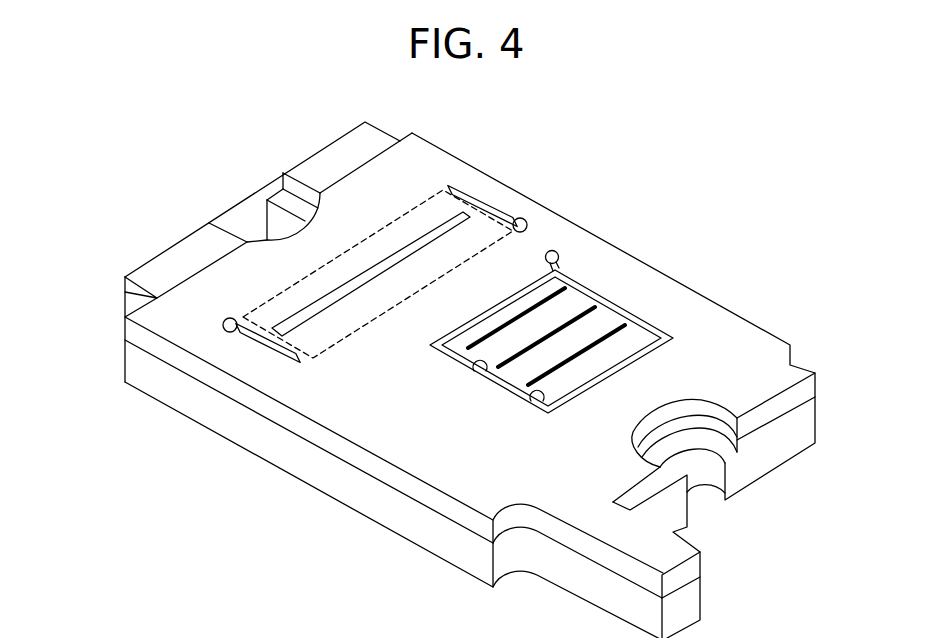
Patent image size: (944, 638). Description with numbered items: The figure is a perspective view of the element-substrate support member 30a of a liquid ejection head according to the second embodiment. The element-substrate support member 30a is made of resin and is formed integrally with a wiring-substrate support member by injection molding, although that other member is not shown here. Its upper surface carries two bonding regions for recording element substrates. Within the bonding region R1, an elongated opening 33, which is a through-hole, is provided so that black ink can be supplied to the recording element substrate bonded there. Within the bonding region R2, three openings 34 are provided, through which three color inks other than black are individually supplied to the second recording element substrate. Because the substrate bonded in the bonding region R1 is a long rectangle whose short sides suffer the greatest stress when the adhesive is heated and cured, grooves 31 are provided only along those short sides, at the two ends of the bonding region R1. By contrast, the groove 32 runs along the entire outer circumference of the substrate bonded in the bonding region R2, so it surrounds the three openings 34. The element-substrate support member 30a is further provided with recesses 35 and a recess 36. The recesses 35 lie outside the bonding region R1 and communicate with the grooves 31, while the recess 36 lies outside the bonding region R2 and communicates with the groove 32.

The element-substrate support member 30a is at (143, 233).
The grooves 31 is at (483, 203).
The groove 32 is at (485, 372).
The opening 33 is at (440, 195).
The openings 34 is at (567, 288).
The recesses 35 is at (526, 220).
The recess 36 is at (559, 256).
The bonding region R1 is at (402, 300).
The bonding region R2 is at (537, 404).